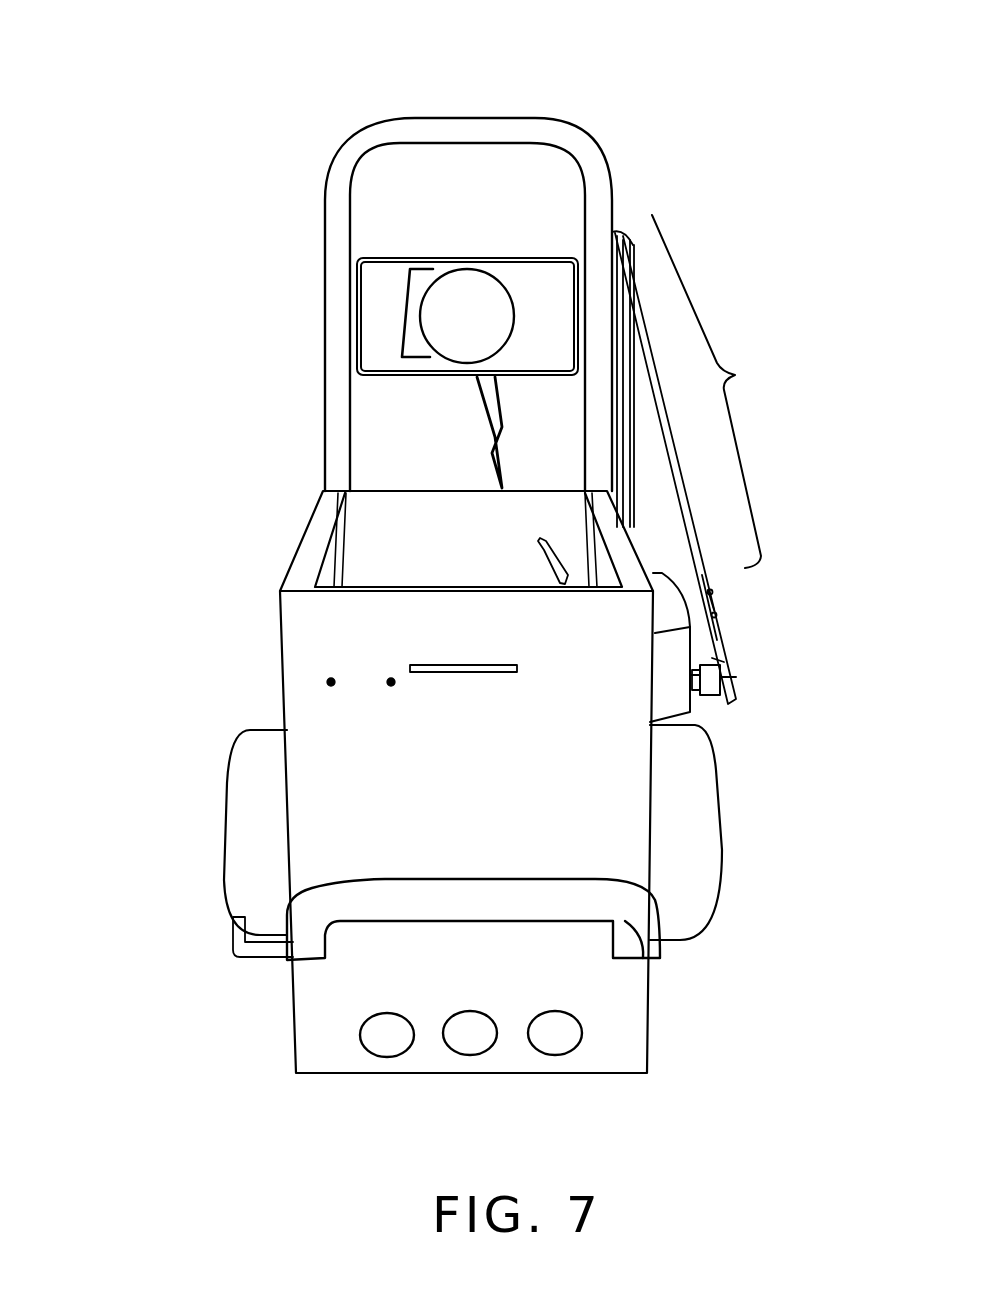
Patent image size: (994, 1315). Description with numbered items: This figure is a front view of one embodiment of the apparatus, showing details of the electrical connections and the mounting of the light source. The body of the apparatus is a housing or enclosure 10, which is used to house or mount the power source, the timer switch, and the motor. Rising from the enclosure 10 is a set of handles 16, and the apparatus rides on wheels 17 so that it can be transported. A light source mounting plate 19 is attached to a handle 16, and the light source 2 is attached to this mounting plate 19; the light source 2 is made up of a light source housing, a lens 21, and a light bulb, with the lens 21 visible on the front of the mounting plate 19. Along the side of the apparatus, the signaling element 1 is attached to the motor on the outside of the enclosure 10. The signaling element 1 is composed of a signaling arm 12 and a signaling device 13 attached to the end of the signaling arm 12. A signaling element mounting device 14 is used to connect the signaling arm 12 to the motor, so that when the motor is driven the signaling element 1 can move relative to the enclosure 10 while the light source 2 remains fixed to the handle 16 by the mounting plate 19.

The housing or enclosure 10 is at (258, 643).
The handle 16 is at (546, 105).
The light source mounting plate 19 is at (545, 240).
The lens 21 is at (480, 318).
The light source 2 is at (396, 318).
The signaling element 1 is at (706, 391).
The signaling device 13 is at (637, 385).
The signaling arm 12 is at (695, 475).
The signaling element mounting device 14 is at (740, 630).
The wheels 17 is at (190, 855).